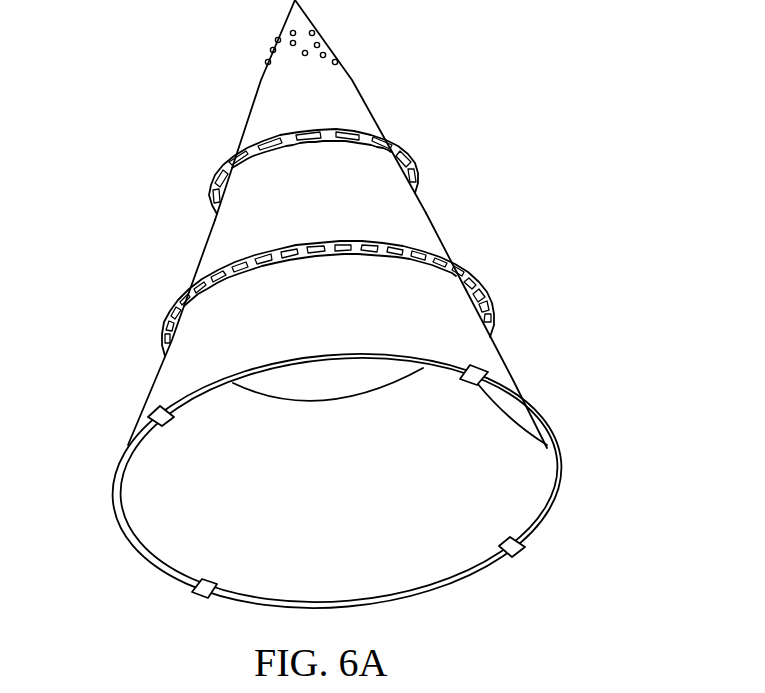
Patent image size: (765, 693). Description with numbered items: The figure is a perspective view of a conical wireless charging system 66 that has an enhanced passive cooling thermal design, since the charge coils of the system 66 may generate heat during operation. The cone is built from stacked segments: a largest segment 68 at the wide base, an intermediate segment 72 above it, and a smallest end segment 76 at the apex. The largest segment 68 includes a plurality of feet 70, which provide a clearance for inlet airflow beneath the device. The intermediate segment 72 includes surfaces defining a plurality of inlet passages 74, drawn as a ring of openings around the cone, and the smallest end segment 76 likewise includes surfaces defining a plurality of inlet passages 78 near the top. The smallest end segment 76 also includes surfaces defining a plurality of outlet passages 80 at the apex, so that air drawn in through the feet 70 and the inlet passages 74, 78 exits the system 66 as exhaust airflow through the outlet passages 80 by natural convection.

The wireless charging system 66 is at (337, 224).
The largest segment 68 is at (497, 368).
The feet 70 is at (152, 421).
The intermediate segment 72 is at (418, 222).
The inlet passages 74 is at (527, 314).
The smallest end segment 76 is at (357, 102).
The inlet passages 78 is at (447, 171).
The outlet passages 80 is at (237, 43).